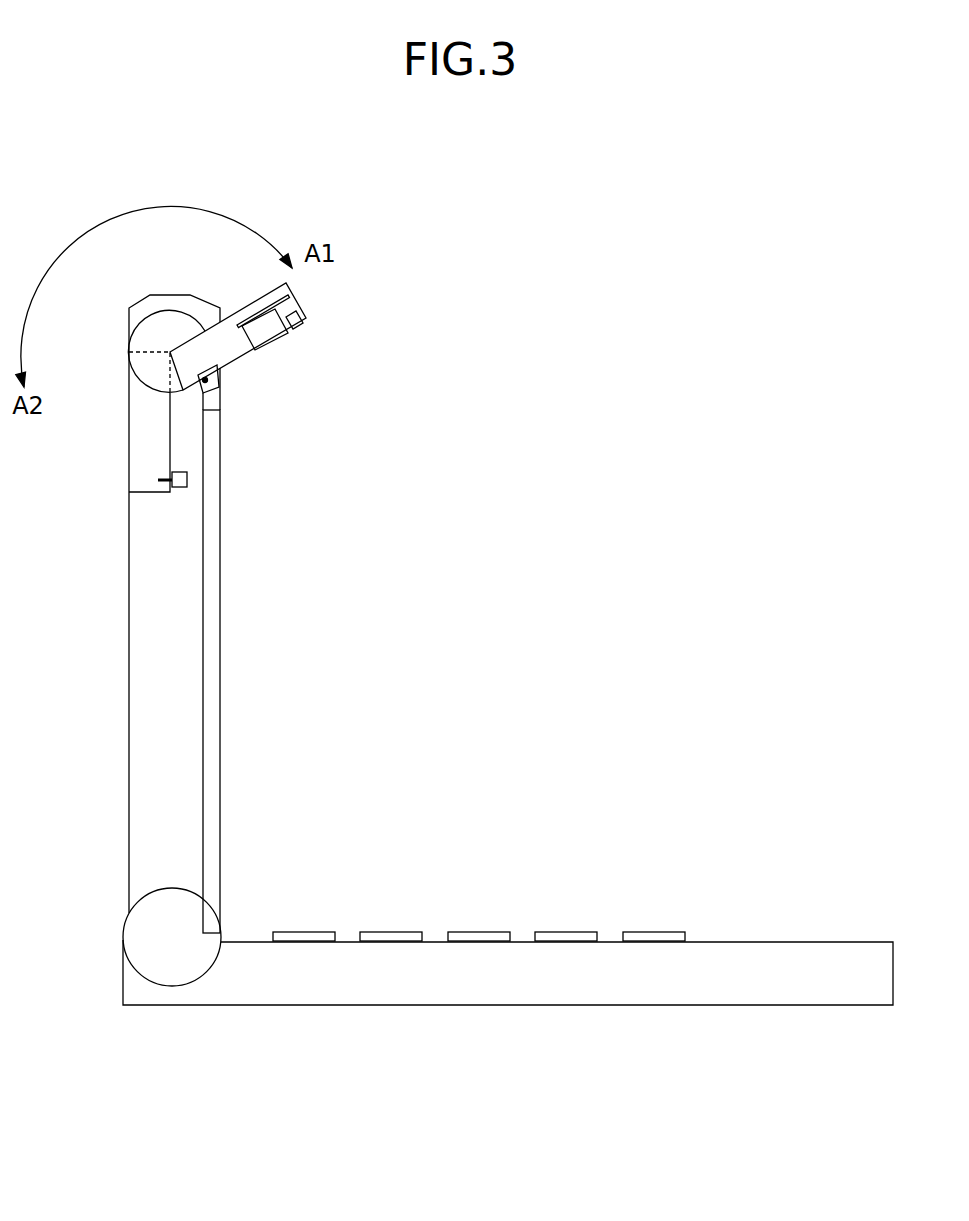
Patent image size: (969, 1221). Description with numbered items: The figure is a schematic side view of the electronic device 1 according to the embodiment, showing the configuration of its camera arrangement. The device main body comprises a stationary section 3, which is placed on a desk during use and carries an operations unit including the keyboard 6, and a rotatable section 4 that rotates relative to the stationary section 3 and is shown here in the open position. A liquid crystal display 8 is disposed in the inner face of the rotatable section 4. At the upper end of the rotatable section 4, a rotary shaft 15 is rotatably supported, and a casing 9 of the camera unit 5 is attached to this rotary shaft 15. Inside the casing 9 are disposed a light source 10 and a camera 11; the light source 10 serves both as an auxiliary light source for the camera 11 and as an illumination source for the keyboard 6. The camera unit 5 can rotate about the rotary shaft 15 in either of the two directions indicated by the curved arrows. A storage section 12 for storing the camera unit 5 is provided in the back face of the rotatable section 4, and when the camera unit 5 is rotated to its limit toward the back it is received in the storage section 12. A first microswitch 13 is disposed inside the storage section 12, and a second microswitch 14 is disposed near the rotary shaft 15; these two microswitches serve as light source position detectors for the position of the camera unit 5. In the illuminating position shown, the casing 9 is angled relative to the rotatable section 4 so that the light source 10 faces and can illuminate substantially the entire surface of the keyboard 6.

The electronic device 1 is at (749, 291).
The stationary section 3 is at (611, 1002).
The rotatable section 4 is at (134, 667).
The camera unit 5 is at (320, 296).
The keyboard 6 is at (475, 932).
The liquid crystal display 8 is at (212, 568).
The casing 9 is at (248, 313).
The light source 10 is at (300, 328).
The camera 11 is at (270, 338).
The storage section 12 is at (140, 457).
The first microswitch 13 is at (190, 478).
The second microswitch 14 is at (217, 397).
The rotary shaft 15 is at (152, 323).